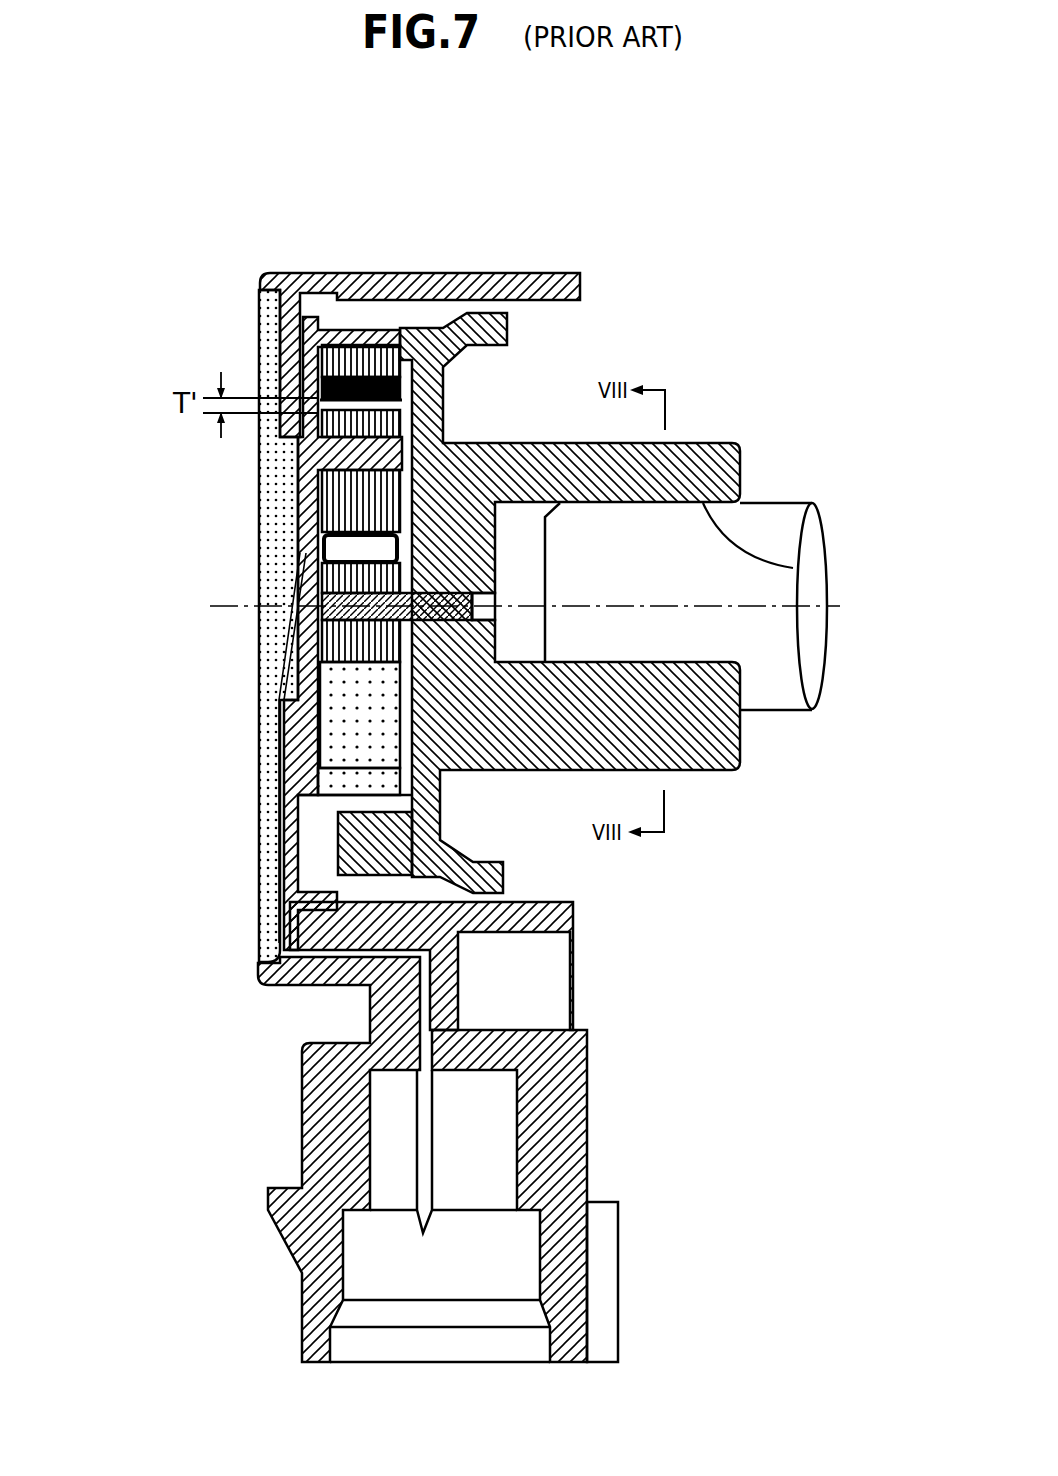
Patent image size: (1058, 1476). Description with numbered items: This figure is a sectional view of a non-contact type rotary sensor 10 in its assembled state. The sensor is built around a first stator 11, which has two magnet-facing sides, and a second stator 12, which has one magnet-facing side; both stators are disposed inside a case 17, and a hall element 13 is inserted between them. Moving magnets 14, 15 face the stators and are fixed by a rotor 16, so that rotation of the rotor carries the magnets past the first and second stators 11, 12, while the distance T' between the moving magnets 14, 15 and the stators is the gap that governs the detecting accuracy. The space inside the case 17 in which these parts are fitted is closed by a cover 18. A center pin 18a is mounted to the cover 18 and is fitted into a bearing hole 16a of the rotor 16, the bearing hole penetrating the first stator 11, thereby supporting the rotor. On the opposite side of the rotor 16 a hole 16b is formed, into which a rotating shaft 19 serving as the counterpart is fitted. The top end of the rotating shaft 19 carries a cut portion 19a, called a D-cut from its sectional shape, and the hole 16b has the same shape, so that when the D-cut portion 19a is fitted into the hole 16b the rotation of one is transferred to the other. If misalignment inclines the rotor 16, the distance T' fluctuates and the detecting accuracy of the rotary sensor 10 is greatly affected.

The rotary sensor 10 is at (233, 267).
The first stator 11 is at (346, 636).
The second stator 12 is at (335, 505).
The hall element 13 is at (352, 553).
The moving magnet 14 is at (330, 385).
The moving magnet 15 is at (233, 358).
The rotor 16 is at (440, 395).
The bearing hole 16a is at (495, 604).
The hole 16b is at (823, 566).
The case 17 is at (405, 273).
The cover 18 is at (283, 818).
The center pin 18a is at (440, 627).
The rotating shaft 19 is at (782, 503).
The D-cut portion 19a is at (678, 662).